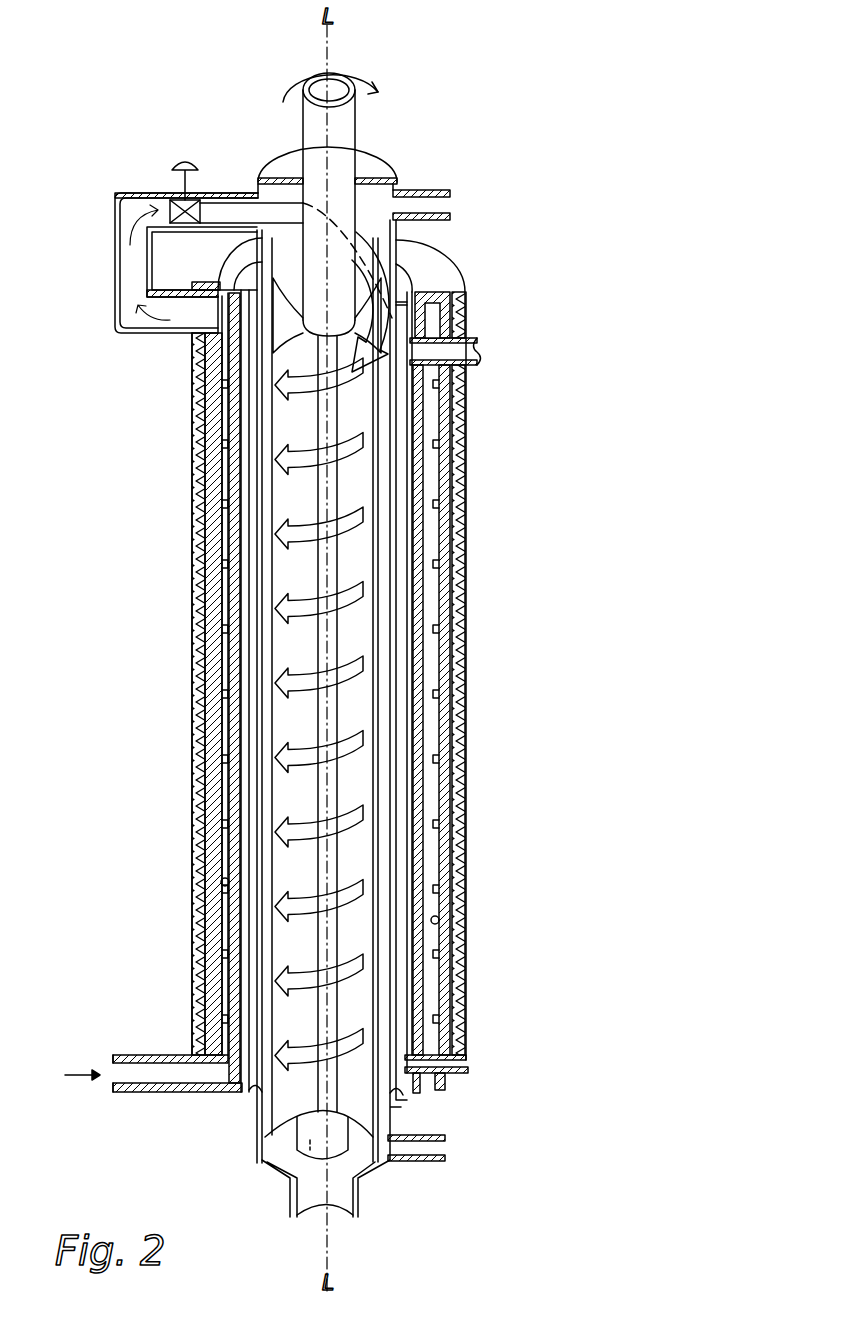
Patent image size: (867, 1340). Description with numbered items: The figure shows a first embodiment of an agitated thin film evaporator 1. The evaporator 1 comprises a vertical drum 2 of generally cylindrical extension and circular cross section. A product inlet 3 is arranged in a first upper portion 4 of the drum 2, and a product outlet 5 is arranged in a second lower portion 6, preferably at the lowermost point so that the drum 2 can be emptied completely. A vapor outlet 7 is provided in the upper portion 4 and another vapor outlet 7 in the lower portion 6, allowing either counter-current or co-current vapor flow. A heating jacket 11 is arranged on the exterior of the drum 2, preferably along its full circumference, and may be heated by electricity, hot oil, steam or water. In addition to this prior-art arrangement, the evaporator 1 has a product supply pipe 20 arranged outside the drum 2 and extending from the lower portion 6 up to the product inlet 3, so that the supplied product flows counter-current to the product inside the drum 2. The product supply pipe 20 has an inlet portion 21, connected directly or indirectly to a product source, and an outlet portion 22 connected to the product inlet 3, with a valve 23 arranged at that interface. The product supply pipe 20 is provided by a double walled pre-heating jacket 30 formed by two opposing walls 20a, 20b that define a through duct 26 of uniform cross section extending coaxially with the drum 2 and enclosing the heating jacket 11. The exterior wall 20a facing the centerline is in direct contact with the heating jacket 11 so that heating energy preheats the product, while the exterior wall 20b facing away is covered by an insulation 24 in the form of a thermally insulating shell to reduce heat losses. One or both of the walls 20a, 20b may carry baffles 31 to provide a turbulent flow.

The evaporator 1 is at (565, 445).
The vertical drum 2 is at (380, 883).
The product inlet 3 is at (233, 190).
The first upper portion 4 is at (258, 175).
The product outlet 5 is at (340, 1203).
The second lower portion 6 is at (258, 1118).
The vapor outlet 7 is at (450, 210).
The heating jacket 11 is at (400, 698).
The product supply pipe 20 is at (150, 1055).
The exterior wall 20a is at (439, 632).
The exterior wall 20b is at (466, 668).
The inlet portion 21 is at (170, 1092).
The outlet portion 22 is at (160, 333).
The valve 23 is at (188, 160).
The insulation 24 is at (462, 598).
The through duct 26 is at (466, 540).
The double walled pre-heating jacket 30 is at (460, 403).
The baffles 31 is at (436, 918).